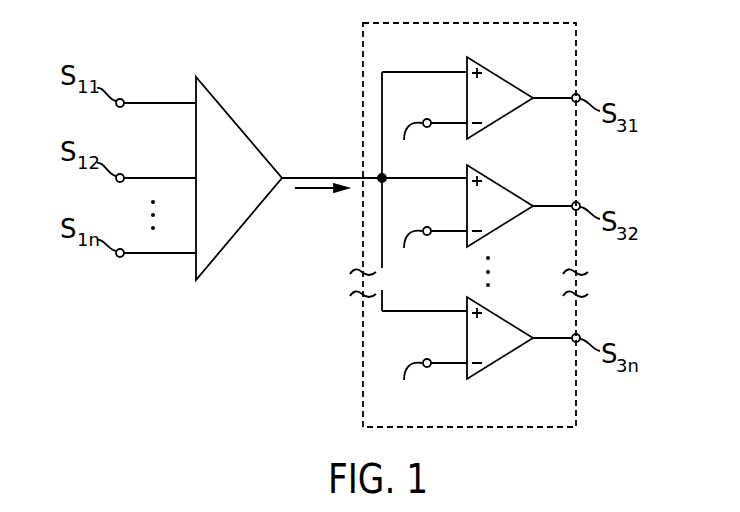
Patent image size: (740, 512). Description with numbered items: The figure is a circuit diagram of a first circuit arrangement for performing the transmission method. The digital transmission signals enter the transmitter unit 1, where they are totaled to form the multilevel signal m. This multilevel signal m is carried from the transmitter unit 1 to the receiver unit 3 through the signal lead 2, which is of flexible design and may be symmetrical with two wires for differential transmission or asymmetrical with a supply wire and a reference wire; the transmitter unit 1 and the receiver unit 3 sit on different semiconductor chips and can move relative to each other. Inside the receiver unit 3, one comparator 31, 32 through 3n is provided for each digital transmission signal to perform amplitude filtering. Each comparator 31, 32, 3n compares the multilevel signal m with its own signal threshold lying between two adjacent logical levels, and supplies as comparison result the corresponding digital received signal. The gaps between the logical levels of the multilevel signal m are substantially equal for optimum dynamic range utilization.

The transmitter unit 1 is at (233, 118).
The signal lead 2 is at (299, 176).
The multilevel signal m is at (315, 192).
The receiver unit 3 is at (362, 400).
The comparator 31 is at (512, 112).
The comparator 32 is at (512, 220).
The comparator 3n is at (512, 352).